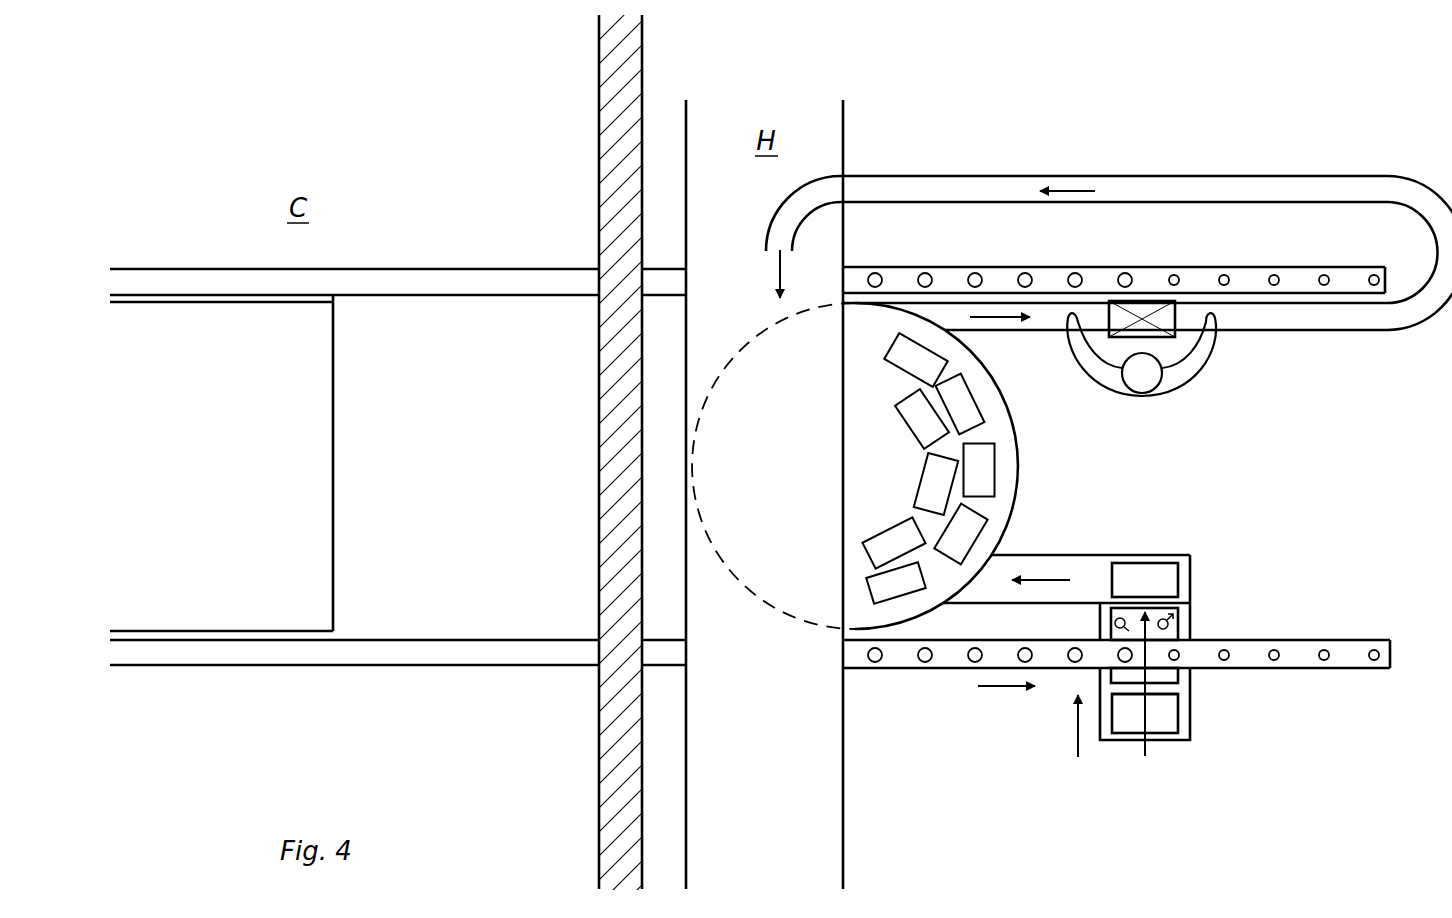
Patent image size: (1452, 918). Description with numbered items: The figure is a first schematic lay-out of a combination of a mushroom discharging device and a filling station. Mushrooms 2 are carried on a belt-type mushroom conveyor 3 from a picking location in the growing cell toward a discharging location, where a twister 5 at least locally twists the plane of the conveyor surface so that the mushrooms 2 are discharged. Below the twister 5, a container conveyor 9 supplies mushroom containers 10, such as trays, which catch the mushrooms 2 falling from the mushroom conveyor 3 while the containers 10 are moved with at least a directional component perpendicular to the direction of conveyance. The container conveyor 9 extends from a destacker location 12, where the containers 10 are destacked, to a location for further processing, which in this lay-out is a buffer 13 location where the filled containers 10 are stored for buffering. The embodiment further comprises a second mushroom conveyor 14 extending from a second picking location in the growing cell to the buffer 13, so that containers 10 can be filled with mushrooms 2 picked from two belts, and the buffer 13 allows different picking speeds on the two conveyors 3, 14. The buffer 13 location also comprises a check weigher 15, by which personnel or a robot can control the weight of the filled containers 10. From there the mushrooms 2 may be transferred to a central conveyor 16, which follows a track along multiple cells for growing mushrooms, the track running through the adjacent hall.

The mushrooms 2 is at (878, 270).
The mushroom conveyor 3 is at (452, 648).
The twister 5 is at (1198, 632).
The container conveyor 9 is at (1085, 572).
The mushroom containers 10 is at (975, 410).
The destacker location 12 is at (1185, 742).
The buffer 13 is at (862, 484).
The second mushroom conveyor 14 is at (452, 283).
The check weigher 15 is at (1140, 300).
The central conveyor 16 is at (746, 813).